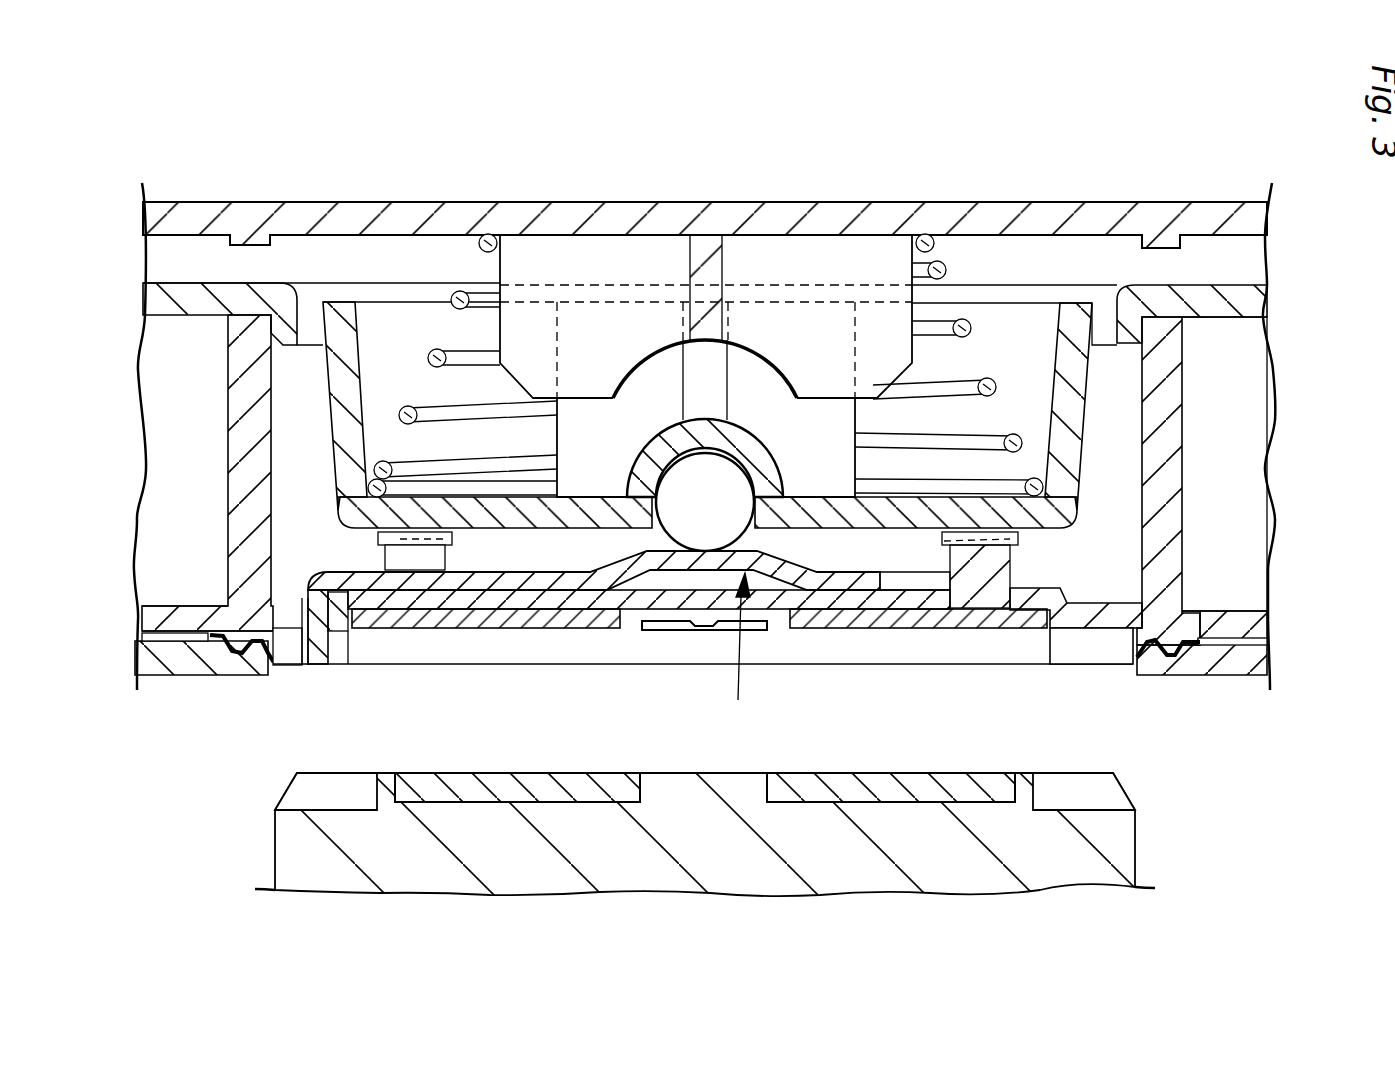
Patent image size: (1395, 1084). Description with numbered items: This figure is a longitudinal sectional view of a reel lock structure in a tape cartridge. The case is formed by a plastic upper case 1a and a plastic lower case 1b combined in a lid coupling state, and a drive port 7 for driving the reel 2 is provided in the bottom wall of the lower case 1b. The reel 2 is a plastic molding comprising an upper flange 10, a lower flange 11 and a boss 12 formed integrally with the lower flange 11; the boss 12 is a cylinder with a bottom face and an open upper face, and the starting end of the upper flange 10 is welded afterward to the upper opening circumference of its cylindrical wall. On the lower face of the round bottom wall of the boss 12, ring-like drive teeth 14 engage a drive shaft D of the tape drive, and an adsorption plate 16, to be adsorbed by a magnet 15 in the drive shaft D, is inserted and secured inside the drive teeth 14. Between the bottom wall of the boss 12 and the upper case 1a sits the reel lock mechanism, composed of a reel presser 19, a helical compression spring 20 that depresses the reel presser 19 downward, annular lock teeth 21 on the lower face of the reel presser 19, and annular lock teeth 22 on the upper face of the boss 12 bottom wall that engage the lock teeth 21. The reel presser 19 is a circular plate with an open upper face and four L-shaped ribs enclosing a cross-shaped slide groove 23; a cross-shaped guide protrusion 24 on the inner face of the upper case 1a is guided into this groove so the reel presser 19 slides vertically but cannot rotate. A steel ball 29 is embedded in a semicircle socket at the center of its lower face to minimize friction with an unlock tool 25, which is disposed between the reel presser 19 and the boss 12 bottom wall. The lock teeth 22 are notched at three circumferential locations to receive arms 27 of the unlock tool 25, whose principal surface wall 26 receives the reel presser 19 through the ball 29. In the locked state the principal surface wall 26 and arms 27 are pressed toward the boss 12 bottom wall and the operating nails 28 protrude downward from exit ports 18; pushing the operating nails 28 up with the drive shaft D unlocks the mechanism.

The upper case 1a is at (275, 200).
The lower case 1b is at (192, 677).
The reel 2 is at (1232, 282).
The drive port 7 is at (1103, 670).
The upper flange 10 is at (1170, 283).
The lower flange 11 is at (1220, 630).
The boss 12 is at (1185, 500).
The drive teeth 14 is at (1072, 650).
The magnet 15 is at (545, 785).
The adsorption plate 16 is at (895, 623).
The exit ports 18 is at (303, 620).
The reel presser 19 is at (1087, 427).
The helical compression spring 20 is at (1025, 427).
The annular lock teeth 21 is at (383, 547).
The annular lock teeth 22 is at (447, 558).
The cross-shaped slide groove 23 is at (720, 343).
The cross-shaped guide protrusion 24 is at (672, 344).
The unlock tool 25 is at (748, 652).
The principal surface wall 26 is at (677, 560).
The arms 27 is at (492, 582).
The operating nails 28 is at (318, 657).
The ball 29 is at (688, 482).
The drive shaft D is at (272, 835).